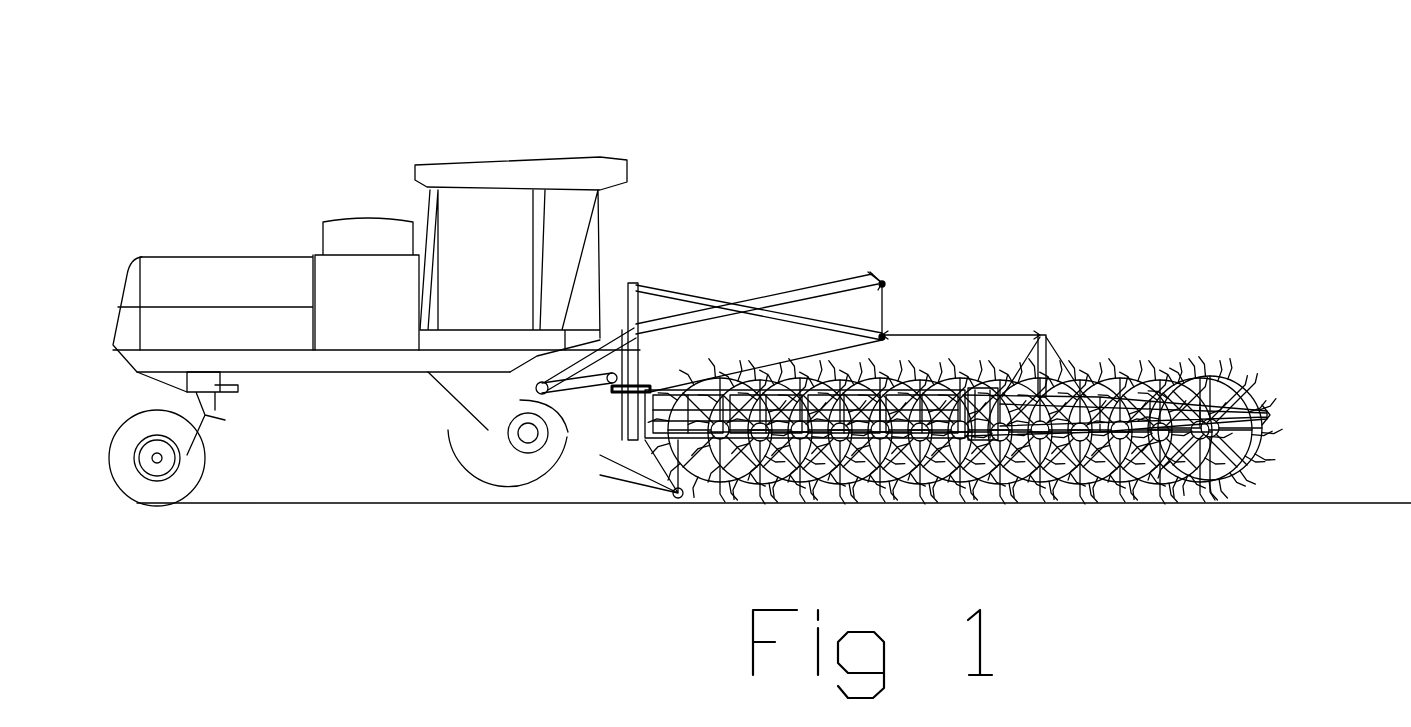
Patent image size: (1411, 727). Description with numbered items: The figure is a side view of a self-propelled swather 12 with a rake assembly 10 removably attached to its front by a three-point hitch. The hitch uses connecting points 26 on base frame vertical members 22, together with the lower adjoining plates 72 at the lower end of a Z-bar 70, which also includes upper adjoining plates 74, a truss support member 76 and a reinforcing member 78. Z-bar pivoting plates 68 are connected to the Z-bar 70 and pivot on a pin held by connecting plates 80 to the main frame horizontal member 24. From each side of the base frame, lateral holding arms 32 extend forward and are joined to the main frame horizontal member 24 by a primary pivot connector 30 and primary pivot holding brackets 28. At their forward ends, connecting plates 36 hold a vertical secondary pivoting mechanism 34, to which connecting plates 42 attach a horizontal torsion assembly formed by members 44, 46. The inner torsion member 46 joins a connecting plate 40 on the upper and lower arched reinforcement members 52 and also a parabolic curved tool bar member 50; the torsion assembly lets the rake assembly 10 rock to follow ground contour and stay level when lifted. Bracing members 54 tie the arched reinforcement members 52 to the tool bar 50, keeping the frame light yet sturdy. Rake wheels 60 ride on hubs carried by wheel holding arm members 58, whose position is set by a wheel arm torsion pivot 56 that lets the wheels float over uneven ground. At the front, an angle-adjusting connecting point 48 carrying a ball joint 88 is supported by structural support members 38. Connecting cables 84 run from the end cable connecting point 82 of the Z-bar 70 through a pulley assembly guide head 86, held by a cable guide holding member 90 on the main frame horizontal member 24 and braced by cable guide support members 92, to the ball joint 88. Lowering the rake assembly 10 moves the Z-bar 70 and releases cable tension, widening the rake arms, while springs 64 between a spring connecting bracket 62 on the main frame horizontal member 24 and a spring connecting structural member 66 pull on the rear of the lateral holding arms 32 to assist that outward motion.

The rake assembly 10 is at (926, 311).
The swather 12 is at (481, 110).
The base frame vertical members 22 is at (636, 378).
The main frame horizontal member 24 is at (616, 345).
The connecting points 26 is at (688, 505).
The primary pivot holding brackets 28 is at (618, 378).
The primary pivot connector 30 is at (692, 300).
The lateral holding arms 32 is at (886, 440).
The secondary pivoting mechanism 34 is at (955, 388).
The connecting plates 36 is at (994, 386).
The structural support members 38 is at (1062, 380).
The connecting plate 40 is at (948, 492).
The connecting plates 42 is at (966, 385).
The torsion assembly member 44 is at (958, 388).
The inner torsion member 46 is at (985, 388).
The angle-adjusting connecting point 48 is at (1047, 345).
The parabolic curved tool bar member 50 is at (1160, 492).
The arched reinforcement members 52 is at (1236, 492).
The bracing members 54 is at (1060, 492).
The wheel arm torsion pivot 56 is at (1270, 440).
The wheel holding arm member 58 is at (1256, 470).
The rake wheels 60 is at (1206, 366).
The spring connecting bracket 62 is at (632, 450).
The springs 64 is at (626, 440).
The spring connecting structural member 66 is at (640, 450).
The Z-bar pivoting plates 68 is at (576, 400).
The Z-bar 70 is at (710, 338).
The lower adjoining plates 72 is at (545, 396).
The upper adjoining plates 74 is at (884, 272).
The truss support member 76 is at (592, 345).
The reinforcing member 78 is at (585, 345).
The connecting plates 80 is at (618, 432).
The end cable connecting point 82 is at (886, 282).
The connecting cables 84 is at (880, 320).
The pulley assembly guide head 86 is at (885, 333).
The ball joint 88 is at (1043, 334).
The cable guide holding member 90 is at (777, 294).
The cable guide support members 92 is at (753, 304).